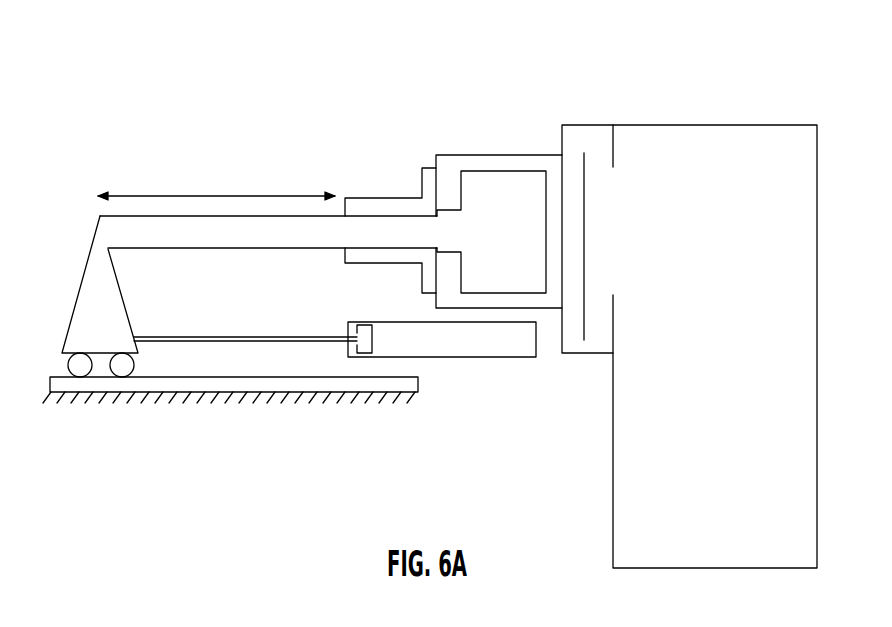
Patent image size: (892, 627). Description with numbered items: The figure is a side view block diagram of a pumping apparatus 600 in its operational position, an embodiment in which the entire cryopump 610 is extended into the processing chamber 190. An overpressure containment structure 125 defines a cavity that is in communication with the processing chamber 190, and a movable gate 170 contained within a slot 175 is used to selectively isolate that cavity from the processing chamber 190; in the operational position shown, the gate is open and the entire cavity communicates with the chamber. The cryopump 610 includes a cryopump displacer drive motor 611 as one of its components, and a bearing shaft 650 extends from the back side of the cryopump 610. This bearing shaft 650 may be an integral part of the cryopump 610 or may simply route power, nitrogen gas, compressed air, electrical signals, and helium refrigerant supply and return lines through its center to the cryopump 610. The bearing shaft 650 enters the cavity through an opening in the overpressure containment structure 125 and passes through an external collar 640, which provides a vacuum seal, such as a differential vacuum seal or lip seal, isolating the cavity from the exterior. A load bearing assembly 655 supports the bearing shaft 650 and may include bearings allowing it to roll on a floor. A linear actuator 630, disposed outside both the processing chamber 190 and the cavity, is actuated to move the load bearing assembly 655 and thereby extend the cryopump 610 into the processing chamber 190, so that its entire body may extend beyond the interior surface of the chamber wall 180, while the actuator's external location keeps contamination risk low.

The pumping apparatus 600 is at (77, 168).
The load bearing assembly 655 is at (121, 290).
The bearing shaft 650 is at (182, 216).
The external collar 640 is at (377, 197).
The overpressure containment structure 125 is at (532, 155).
The cryopump 610 is at (490, 170).
The cryopump displacer drive motor 611 is at (442, 228).
The linear actuator 630 is at (443, 358).
The slot 175 is at (590, 354).
The movable gate 170 is at (586, 178).
The chamber wall 180 is at (613, 380).
The processing chamber 190 is at (695, 224).